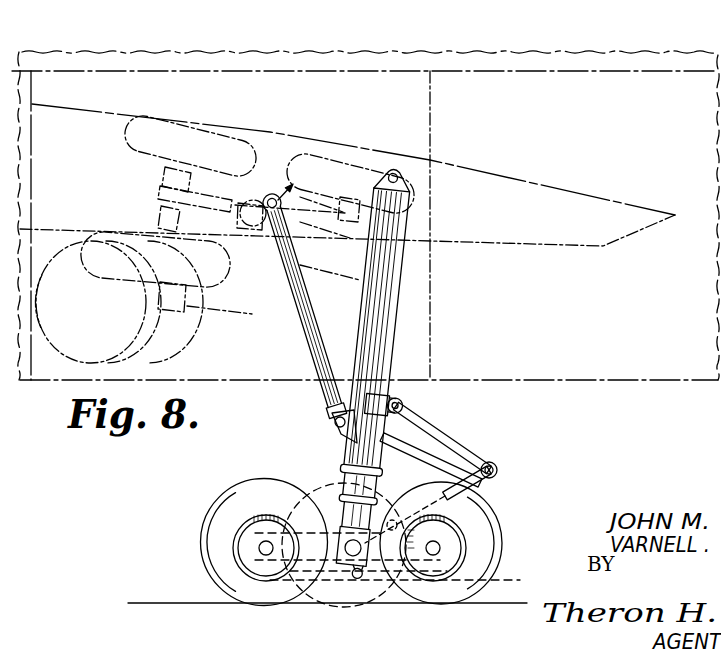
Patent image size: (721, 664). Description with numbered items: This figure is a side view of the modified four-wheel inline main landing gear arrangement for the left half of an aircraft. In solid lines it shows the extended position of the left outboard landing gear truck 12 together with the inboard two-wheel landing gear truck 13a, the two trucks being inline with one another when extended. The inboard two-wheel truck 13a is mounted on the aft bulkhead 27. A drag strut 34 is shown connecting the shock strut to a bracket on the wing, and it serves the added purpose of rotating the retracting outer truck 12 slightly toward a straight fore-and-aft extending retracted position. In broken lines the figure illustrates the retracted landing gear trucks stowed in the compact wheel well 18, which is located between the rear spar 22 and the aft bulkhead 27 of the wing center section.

The outer landing gear truck 12 is at (243, 486).
The two-wheel truck 13a is at (322, 485).
The wheel well 18 is at (32, 182).
The rear spar 22 is at (32, 101).
The aft bulkhead 27 is at (433, 124).
The drag strut 34 is at (311, 350).